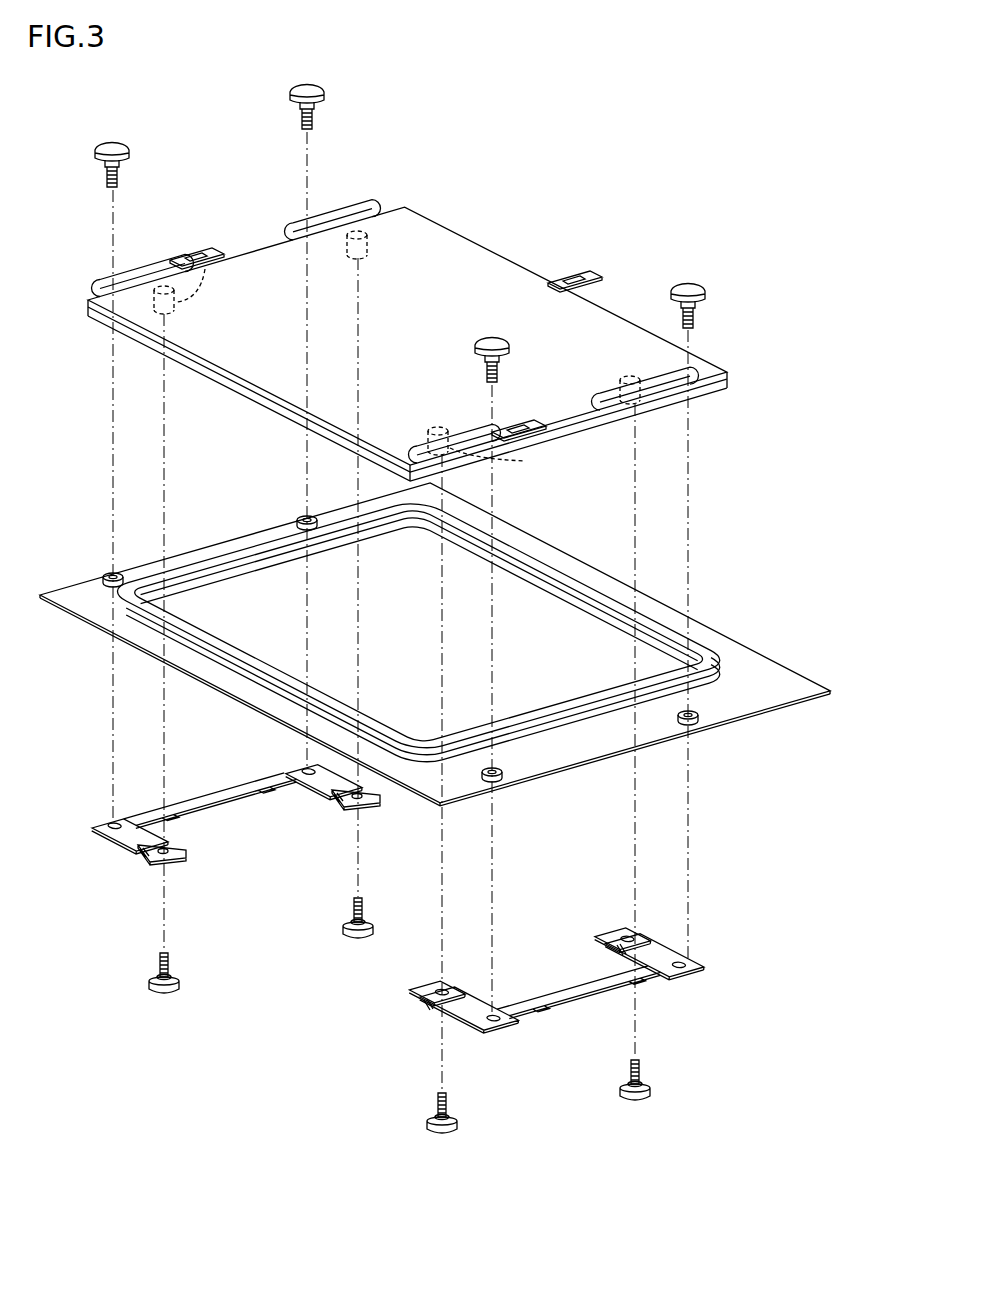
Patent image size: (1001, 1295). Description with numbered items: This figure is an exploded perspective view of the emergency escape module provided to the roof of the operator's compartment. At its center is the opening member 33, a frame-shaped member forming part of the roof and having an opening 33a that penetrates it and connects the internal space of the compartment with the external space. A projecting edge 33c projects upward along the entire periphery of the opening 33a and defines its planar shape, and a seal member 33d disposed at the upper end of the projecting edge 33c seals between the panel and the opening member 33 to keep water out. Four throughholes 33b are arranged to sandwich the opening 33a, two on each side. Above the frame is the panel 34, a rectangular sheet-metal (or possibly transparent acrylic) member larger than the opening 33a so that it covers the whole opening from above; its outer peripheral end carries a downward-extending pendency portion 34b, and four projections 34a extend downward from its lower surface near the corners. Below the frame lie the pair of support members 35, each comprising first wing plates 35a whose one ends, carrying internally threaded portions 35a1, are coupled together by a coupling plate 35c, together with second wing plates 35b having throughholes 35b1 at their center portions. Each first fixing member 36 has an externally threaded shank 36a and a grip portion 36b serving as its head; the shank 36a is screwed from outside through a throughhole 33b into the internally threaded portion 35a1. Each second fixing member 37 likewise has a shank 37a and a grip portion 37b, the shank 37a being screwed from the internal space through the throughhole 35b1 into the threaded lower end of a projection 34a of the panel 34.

The opening member 33 is at (435, 653).
The opening 33a is at (543, 635).
The throughholes 33b is at (106, 574).
The projecting edge 33c is at (434, 655).
The seal member 33d is at (695, 648).
The panel 34 is at (407, 324).
The projections 34a is at (208, 246).
The pendency portion 34b is at (232, 377).
The support members 35 is at (403, 909).
The first wing plates 35a is at (122, 840).
The internally threaded portion 35a1 is at (300, 768).
The second wing plates 35b is at (142, 862).
The throughhole 35b1 is at (180, 856).
The coupling plate 35c is at (205, 800).
The fixing member (first fixing member) 36 is at (425, 213).
The shank 36a is at (117, 178).
The grip portion 36b is at (120, 150).
The fixing member (second fixing member) 37 is at (429, 1025).
The shank 37a is at (170, 963).
The grip portion 37b is at (180, 987).